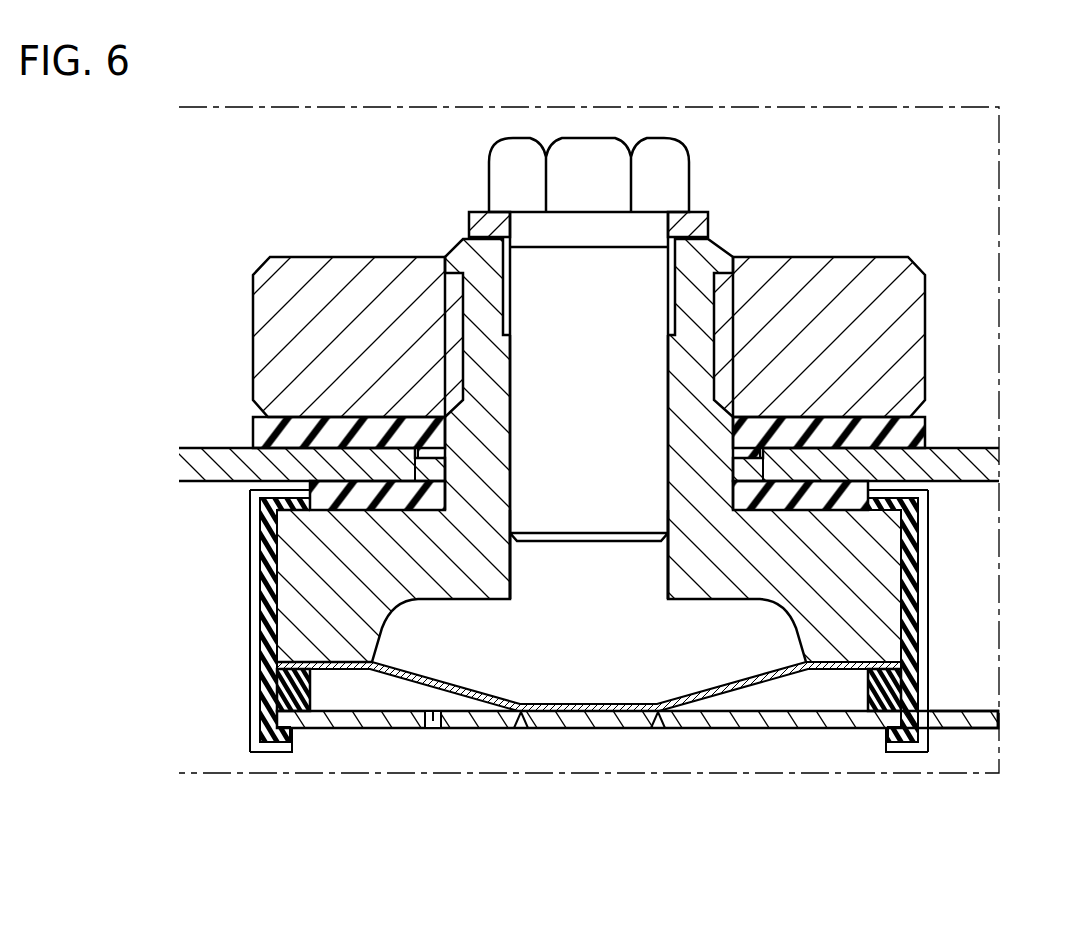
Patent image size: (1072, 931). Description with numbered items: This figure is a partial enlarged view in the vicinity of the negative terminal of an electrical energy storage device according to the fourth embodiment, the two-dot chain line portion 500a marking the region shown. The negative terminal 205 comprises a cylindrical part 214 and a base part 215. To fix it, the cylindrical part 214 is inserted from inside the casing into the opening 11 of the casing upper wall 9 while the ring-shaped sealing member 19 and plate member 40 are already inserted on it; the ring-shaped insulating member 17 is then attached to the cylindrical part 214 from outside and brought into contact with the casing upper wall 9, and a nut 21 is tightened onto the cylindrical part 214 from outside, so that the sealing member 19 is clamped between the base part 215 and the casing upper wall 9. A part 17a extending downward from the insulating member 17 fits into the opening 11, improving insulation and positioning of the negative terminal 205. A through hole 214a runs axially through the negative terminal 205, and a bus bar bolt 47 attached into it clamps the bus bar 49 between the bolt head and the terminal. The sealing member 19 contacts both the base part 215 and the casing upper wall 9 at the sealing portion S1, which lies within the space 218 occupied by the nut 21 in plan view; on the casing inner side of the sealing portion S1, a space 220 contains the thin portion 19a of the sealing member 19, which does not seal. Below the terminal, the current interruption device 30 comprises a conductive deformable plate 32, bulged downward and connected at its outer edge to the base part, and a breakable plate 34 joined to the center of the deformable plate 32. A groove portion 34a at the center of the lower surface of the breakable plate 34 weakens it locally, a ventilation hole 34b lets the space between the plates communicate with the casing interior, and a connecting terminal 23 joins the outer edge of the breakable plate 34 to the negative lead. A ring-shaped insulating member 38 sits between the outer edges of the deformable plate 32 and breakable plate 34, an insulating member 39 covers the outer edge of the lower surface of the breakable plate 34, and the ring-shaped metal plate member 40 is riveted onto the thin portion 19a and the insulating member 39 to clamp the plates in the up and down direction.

The two-dot chain line portion 500a is at (240, 107).
The bus bar bolt 47 is at (490, 142).
The bus bar 49 is at (703, 225).
The through hole 214a is at (512, 370).
The negative terminal 205 is at (880, 160).
The cylindrical part 214 is at (708, 358).
The base part 215 is at (815, 545).
The nut 21 is at (902, 287).
The insulating member 17 is at (267, 423).
The part extending downward 17a is at (433, 425).
The opening 11 is at (415, 470).
The casing upper wall 9 is at (966, 454).
The current interruption device 30 is at (954, 572).
The deformable plate 32 is at (917, 649).
The insulating member 38 is at (917, 696).
The insulating member 39 is at (263, 737).
The plate member 40 is at (258, 660).
The sealing member 19 is at (397, 512).
The thin portion 19a is at (290, 512).
The space 218 is at (333, 512).
The sealing portion S1 is at (370, 512).
The ventilation hole 34b is at (432, 720).
The groove portion 34a is at (657, 728).
The breakable plate 34 is at (762, 720).
The space 220 is at (893, 503).
The connecting terminal 23 is at (972, 720).